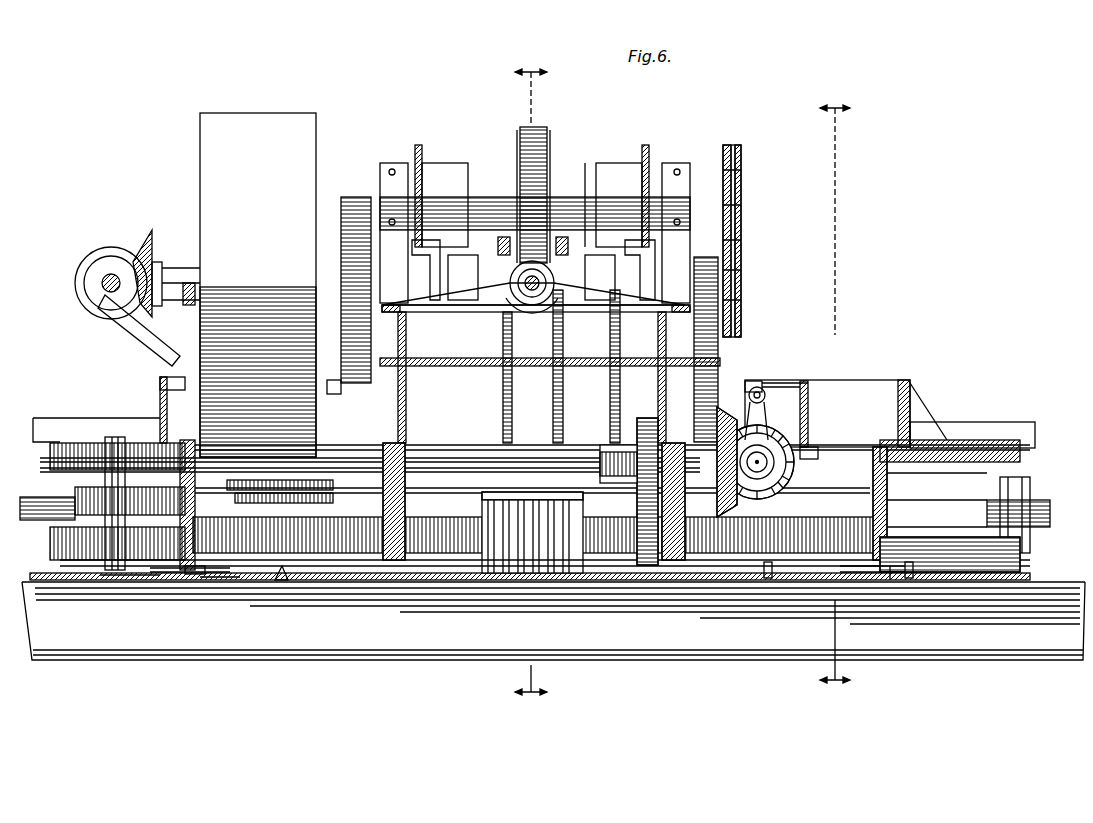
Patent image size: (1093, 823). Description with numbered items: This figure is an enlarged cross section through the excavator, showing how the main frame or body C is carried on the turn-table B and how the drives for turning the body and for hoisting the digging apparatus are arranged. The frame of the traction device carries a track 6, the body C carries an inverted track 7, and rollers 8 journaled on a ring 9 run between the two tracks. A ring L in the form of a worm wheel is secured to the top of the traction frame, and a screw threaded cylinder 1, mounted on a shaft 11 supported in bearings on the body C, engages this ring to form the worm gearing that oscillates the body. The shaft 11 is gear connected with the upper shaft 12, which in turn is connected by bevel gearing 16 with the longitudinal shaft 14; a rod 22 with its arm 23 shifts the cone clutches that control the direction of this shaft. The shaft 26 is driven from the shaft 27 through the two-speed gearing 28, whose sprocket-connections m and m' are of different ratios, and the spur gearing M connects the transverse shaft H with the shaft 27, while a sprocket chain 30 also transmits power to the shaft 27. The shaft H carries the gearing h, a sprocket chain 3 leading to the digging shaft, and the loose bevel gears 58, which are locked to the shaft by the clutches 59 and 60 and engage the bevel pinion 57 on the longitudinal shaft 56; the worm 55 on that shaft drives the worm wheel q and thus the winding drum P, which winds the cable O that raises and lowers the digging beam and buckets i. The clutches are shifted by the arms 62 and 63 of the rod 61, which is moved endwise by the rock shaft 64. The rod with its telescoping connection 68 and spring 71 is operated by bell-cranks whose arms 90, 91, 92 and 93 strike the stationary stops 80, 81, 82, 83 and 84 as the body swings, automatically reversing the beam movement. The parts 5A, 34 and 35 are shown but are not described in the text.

The screw threaded cylinder 1 is at (256, 118).
The sprocket chain 3 is at (742, 170).
The spool flange 5A is at (586, 192).
The track 6 is at (50, 540).
The inverted track 7 is at (50, 458).
The rollers 8 is at (24, 486).
The ring 9 is at (128, 503).
The shaft 11 is at (612, 598).
The upper shaft 12 is at (463, 460).
The longitudinally alined shaft 14 is at (760, 460).
The bevel gearing 16 is at (725, 425).
The rod 22 is at (760, 386).
The arm 23 is at (765, 410).
The shaft 26 is at (475, 440).
The shaft 27 is at (462, 362).
The two-speed gearing 28 is at (612, 485).
The sprocket chain 30 is at (338, 392).
The link 34 is at (785, 383).
The stop 35 is at (805, 440).
The worm 55 is at (552, 305).
The longitudinal shaft 56 is at (518, 290).
The bevel pinion 57 is at (515, 305).
The bevel gears 58 is at (526, 318).
The clutch 59 is at (466, 256).
The clutch 60 is at (596, 250).
The rod 61 is at (483, 213).
The arm 62 is at (418, 258).
The arm 63 is at (640, 260).
The rock shaft 64 is at (530, 404).
The telescoping connection 68 is at (300, 503).
The spring 71 is at (322, 503).
The stationary stop 80 is at (772, 570).
The stationary stop 81 is at (913, 570).
The stationary stop 82 is at (210, 580).
The stationary stop 83 is at (118, 578).
The stationary stop 84 is at (280, 580).
The arm 90 is at (170, 578).
The arm 91 is at (215, 569).
The arm 92 is at (852, 580).
The arm 93 is at (898, 580).
The turn-table B is at (1050, 514).
The main frame or body C is at (158, 395).
The transverse shaft H is at (412, 312).
The ring L is at (712, 583).
The spur gearing M is at (714, 340).
The cable O is at (419, 145).
The winding drum P is at (437, 160).
The gearing h is at (352, 198).
The digging buckets i is at (530, 575).
The sprocket-connection m is at (619, 366).
The sprocket-connection m' is at (567, 366).
The worm wheel q is at (548, 145).